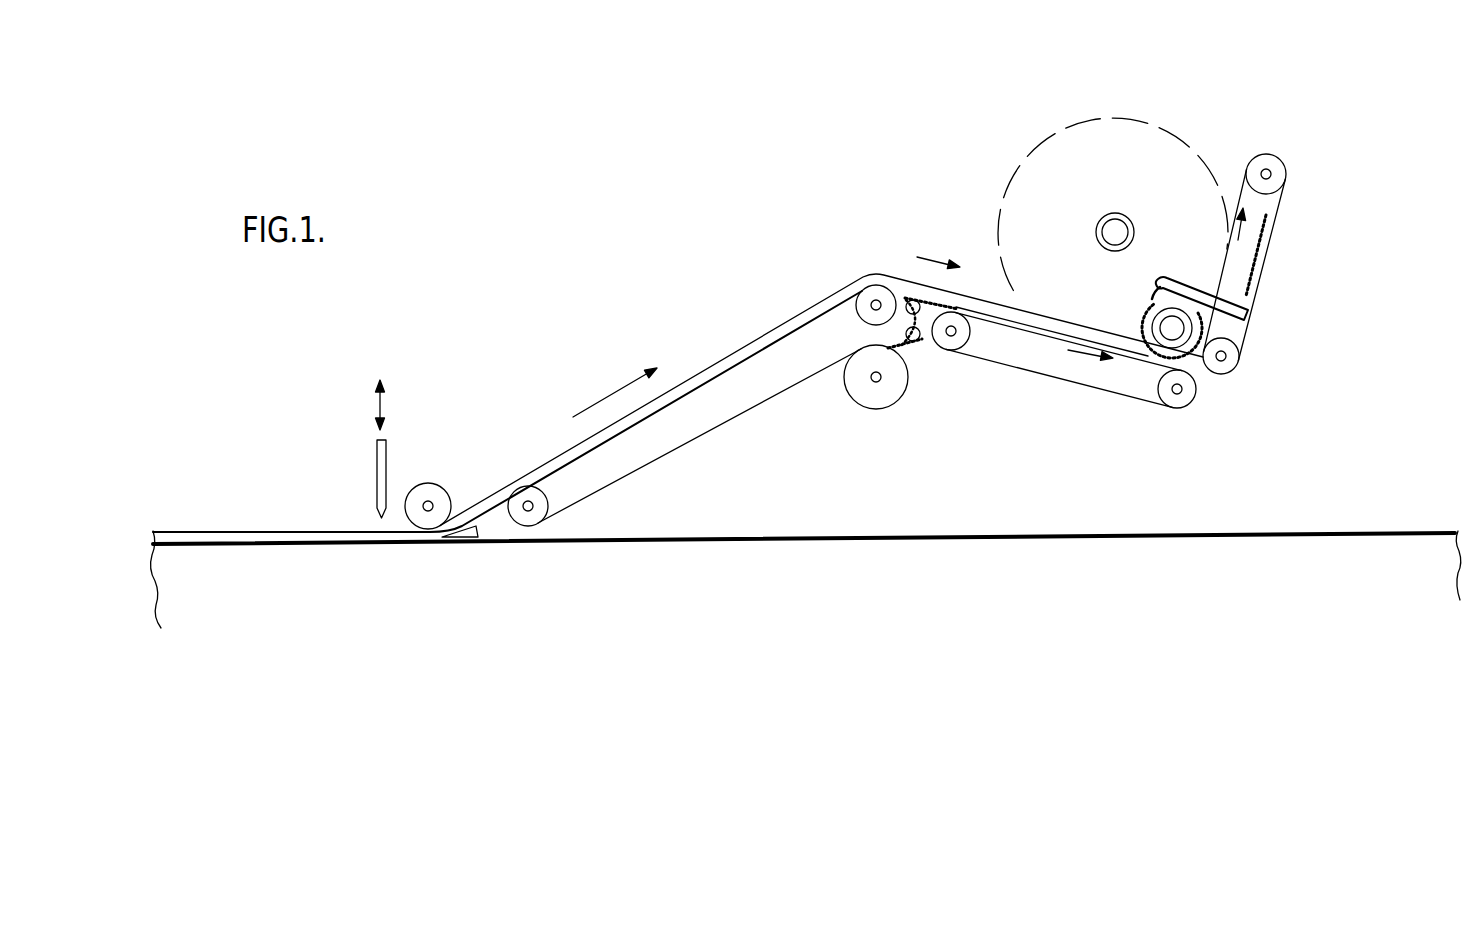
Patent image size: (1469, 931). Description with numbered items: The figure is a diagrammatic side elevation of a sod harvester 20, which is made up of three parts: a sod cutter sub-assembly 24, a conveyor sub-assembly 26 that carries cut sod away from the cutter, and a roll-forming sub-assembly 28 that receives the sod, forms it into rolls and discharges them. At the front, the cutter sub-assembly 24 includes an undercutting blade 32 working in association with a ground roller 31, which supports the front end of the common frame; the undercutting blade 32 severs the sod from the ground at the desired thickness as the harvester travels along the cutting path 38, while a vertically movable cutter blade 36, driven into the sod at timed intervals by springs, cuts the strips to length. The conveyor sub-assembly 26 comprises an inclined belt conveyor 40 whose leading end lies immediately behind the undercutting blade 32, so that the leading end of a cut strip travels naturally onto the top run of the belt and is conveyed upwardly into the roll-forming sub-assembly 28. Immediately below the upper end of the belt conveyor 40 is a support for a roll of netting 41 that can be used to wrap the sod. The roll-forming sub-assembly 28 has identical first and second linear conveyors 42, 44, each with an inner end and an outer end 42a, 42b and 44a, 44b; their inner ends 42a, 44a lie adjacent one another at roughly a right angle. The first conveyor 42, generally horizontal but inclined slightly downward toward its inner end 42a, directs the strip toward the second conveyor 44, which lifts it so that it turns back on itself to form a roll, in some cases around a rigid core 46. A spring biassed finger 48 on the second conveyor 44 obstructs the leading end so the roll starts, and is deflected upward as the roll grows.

The sod harvester 20 is at (845, 175).
The sod cutter sub-assembly 24 is at (409, 375).
The conveyor sub-assembly 26 is at (713, 281).
The roll-forming sub-assembly 28 is at (1123, 98).
The ground roller 31 is at (442, 486).
The undercutting blade 32 is at (478, 545).
The cutter blade 36 is at (376, 477).
The cutting path 38 is at (380, 572).
The belt conveyor 40 is at (710, 430).
The roll of netting 41 is at (896, 418).
The first linear conveyor 42 is at (1115, 412).
The inner end of first conveyor 42a is at (1181, 408).
The outer end of first conveyor 42b is at (952, 350).
The second linear conveyor 44 is at (1292, 269).
The inner end of second conveyor 44a is at (1240, 371).
The outer end of second conveyor 44b is at (1280, 160).
The rigid core 46 is at (1150, 326).
The spring biassed finger 48 is at (1178, 272).